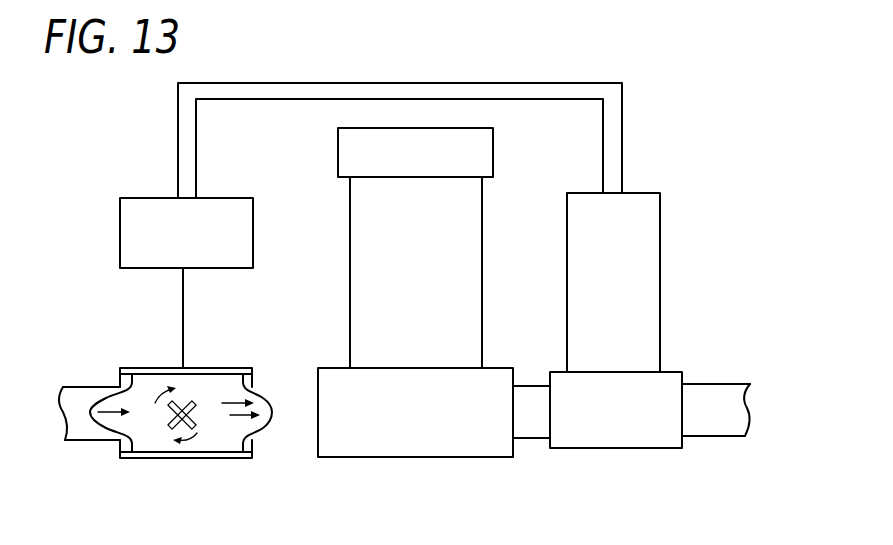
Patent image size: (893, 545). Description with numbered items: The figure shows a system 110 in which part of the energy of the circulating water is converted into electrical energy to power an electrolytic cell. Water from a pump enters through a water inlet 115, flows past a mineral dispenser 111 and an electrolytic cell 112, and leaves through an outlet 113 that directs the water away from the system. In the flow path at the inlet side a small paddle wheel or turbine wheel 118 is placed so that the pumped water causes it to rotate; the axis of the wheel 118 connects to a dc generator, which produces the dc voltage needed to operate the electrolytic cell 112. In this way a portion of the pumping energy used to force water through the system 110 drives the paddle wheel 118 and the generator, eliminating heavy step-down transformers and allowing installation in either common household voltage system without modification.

The system 110 is at (505, 70).
The mineral dispenser 111 is at (472, 277).
The electrolytic cell 112 is at (647, 268).
The outlet 113 is at (717, 422).
The water inlet 115 is at (80, 387).
The paddle wheel 118 is at (193, 418).